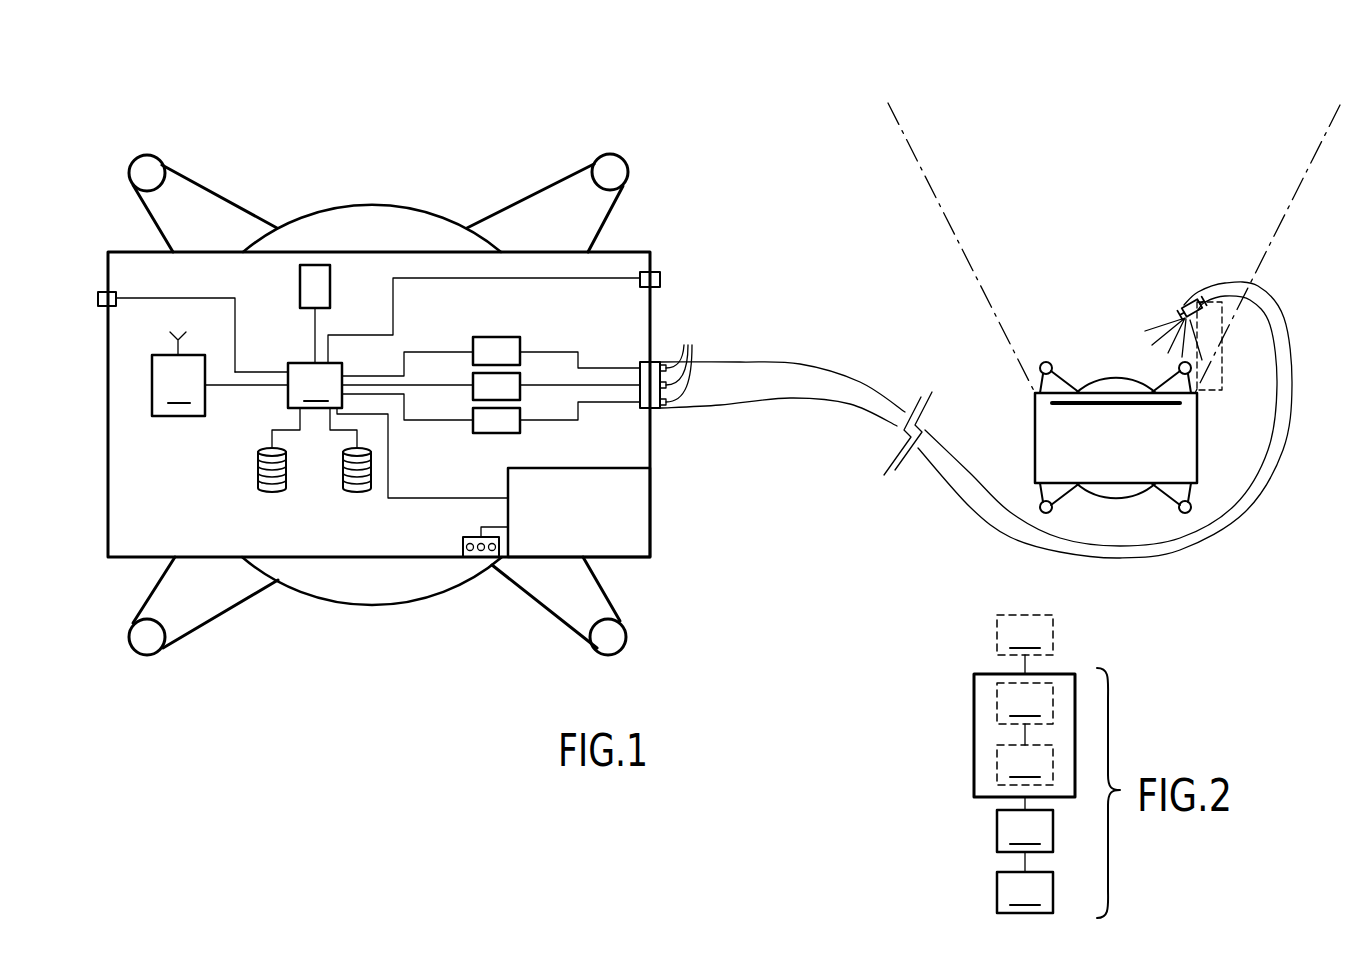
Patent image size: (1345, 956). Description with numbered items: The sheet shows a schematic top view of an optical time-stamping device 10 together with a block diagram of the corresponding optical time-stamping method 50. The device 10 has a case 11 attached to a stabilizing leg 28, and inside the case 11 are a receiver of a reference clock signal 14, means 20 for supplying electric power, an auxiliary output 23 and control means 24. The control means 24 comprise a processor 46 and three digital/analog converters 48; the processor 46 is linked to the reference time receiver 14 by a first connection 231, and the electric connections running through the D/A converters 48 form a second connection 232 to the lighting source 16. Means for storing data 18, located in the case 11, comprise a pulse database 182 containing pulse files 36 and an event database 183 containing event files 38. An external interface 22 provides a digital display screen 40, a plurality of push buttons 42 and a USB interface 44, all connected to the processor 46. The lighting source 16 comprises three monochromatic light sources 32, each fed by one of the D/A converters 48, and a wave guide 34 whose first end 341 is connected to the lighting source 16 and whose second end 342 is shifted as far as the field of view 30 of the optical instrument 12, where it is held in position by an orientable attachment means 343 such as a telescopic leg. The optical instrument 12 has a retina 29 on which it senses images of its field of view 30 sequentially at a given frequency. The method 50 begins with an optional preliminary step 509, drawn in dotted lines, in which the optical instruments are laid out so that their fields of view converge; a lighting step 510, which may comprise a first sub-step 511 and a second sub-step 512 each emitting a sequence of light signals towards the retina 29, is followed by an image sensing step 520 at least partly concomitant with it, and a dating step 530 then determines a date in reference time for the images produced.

In FIG. 1, the optical time-stamping device 10 is at (706, 196).
In FIG. 1, the case 11 is at (618, 250).
In FIG. 1, the optical instrument 12 is at (1022, 430).
In FIG. 1, the receiver of a reference clock signal 14 is at (178, 374).
In FIG. 1, the lighting source 16 is at (749, 419).
In FIG. 1, the means for storing data 18 is at (303, 489).
In FIG. 1, the pulse database 182 is at (262, 484).
In FIG. 1, the event database 183 is at (372, 481).
In FIG. 1, the means for supplying electric power 20 is at (296, 292).
In FIG. 1, the external interface 22 is at (563, 562).
In FIG. 1, the auxiliary output 23 is at (661, 281).
In FIG. 1, the second connection 232 is at (488, 325).
In FIG. 1, the first connection 231 is at (216, 372).
In FIG. 1, the control means 24 is at (250, 412).
In FIG. 1, the stabilizing leg 28 is at (352, 580).
In FIG. 1, the retina 29 is at (1140, 405).
In FIG. 1, the field of view 30 is at (1012, 172).
In FIG. 1, the monochromatic light sources 32 is at (683, 361).
In FIG. 1, the wave guide 34 is at (755, 372).
In FIG. 1, the first end 341 is at (714, 409).
In FIG. 1, the second end 342 is at (1180, 304).
In FIG. 1, the orientable attachment means 343 is at (1197, 300).
In FIG. 1, the pulse files 36 is at (258, 470).
In FIG. 1, the event files 38 is at (344, 468).
In FIG. 1, the digital display screen 40 is at (651, 526).
In FIG. 1, the push buttons 42 is at (492, 551).
In FIG. 1, the USB interface 44 is at (105, 307).
In FIG. 1, the processor 46 is at (390, 425).
In FIG. 1, the digital/analog converters 48 is at (505, 355).
In FIG. 2, the optical time-stamping method 50 is at (982, 764).
In FIG. 2, the preliminary step 509 is at (1025, 635).
In FIG. 2, the lighting step 510 is at (994, 735).
In FIG. 2, the first sub-step 511 is at (1025, 703).
In FIG. 2, the second sub-step 512 is at (1025, 765).
In FIG. 2, the image sensing step 520 is at (1025, 831).
In FIG. 2, the dating step 530 is at (1025, 892).